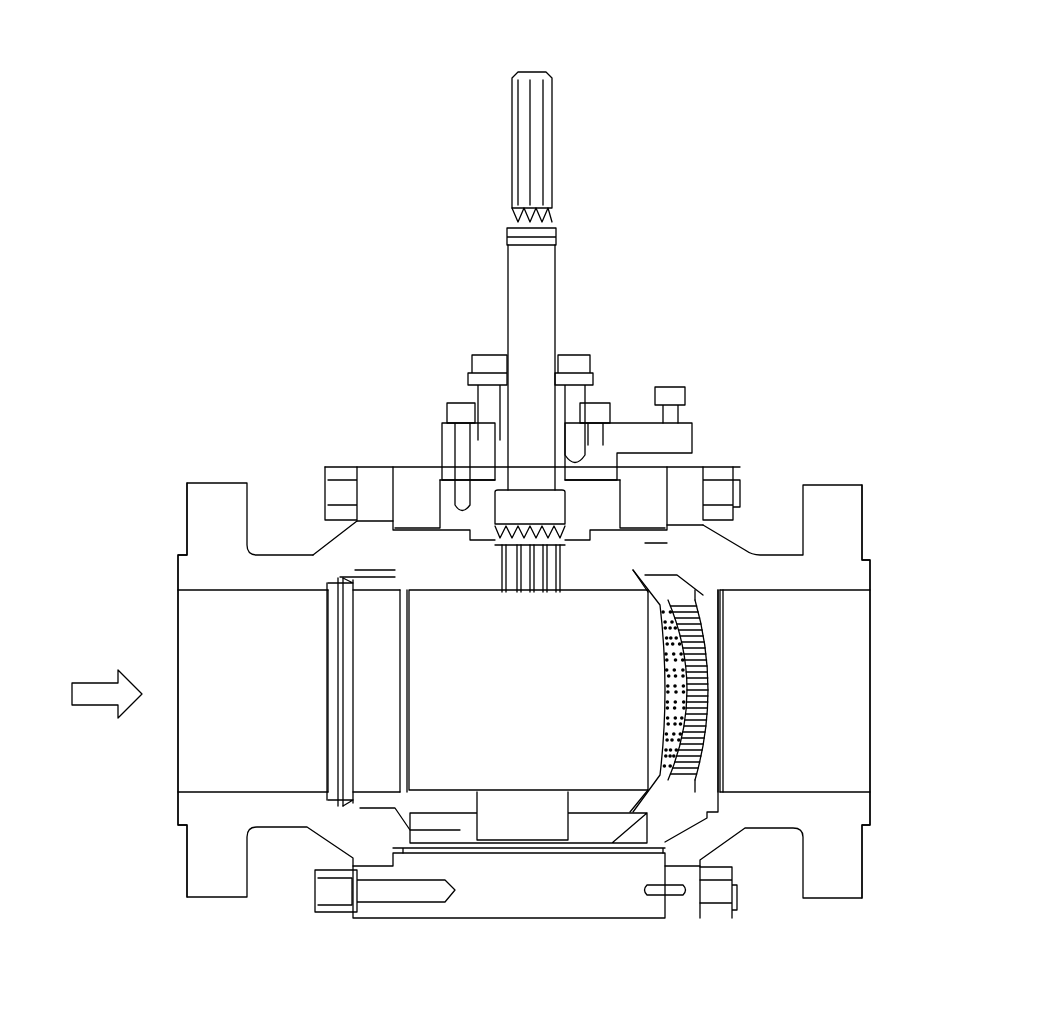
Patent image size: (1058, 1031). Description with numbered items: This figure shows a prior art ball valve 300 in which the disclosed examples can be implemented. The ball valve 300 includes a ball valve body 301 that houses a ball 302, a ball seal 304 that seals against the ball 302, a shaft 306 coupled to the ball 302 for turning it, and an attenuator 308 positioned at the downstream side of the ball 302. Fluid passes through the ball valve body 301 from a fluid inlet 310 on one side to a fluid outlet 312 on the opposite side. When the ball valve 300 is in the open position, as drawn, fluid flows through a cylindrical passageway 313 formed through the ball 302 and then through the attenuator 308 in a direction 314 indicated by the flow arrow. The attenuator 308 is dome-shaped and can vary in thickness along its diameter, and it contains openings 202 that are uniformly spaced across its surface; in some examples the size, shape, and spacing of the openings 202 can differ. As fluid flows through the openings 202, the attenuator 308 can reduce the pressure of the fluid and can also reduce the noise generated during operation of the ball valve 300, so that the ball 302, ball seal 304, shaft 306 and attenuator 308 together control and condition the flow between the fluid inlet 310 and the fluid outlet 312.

The ball valve 300 is at (727, 172).
The ball valve body 301 is at (862, 545).
The ball 302 is at (612, 822).
The ball seal 304 is at (400, 605).
The shaft 306 is at (575, 560).
The attenuator 308 is at (722, 690).
The fluid inlet 310 is at (178, 735).
The fluid outlet 312 is at (878, 735).
The cylindrical passageway 313 is at (537, 691).
The direction 314 is at (107, 680).
The openings 202 is at (672, 727).